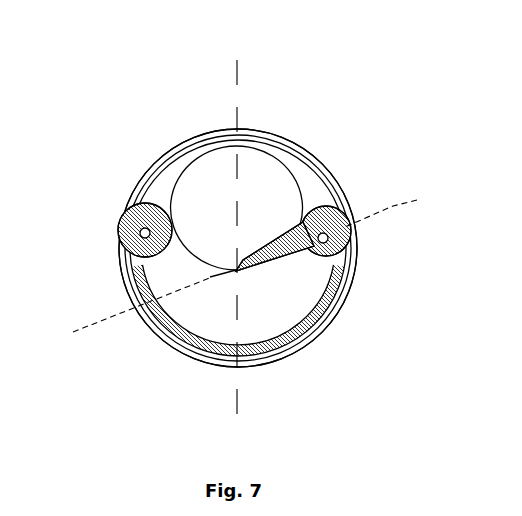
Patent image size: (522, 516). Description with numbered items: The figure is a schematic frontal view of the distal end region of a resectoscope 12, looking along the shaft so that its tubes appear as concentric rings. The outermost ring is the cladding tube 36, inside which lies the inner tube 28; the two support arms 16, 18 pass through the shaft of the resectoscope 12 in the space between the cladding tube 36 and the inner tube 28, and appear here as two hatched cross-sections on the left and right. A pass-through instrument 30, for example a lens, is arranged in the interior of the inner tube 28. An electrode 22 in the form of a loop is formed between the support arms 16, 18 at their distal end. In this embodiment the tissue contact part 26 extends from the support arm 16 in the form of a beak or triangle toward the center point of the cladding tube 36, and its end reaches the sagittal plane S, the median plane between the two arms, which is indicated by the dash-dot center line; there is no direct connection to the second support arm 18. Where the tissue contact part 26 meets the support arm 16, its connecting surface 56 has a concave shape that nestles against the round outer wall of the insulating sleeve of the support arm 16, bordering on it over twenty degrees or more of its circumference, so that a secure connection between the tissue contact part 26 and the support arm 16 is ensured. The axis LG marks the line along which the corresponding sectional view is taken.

The resectoscope 12 is at (157, 53).
The cladding tube 36 is at (134, 184).
The inner tube 28 is at (289, 141).
The electrode 22 is at (184, 357).
The tissue contact part 26 is at (272, 356).
The support arm 18 is at (124, 233).
The support arm 16 is at (356, 232).
The connecting surface 56 is at (324, 206).
The pass-through instrument 30 is at (266, 143).
The axis LG is at (243, 263).
The sagittal plane S is at (237, 248).